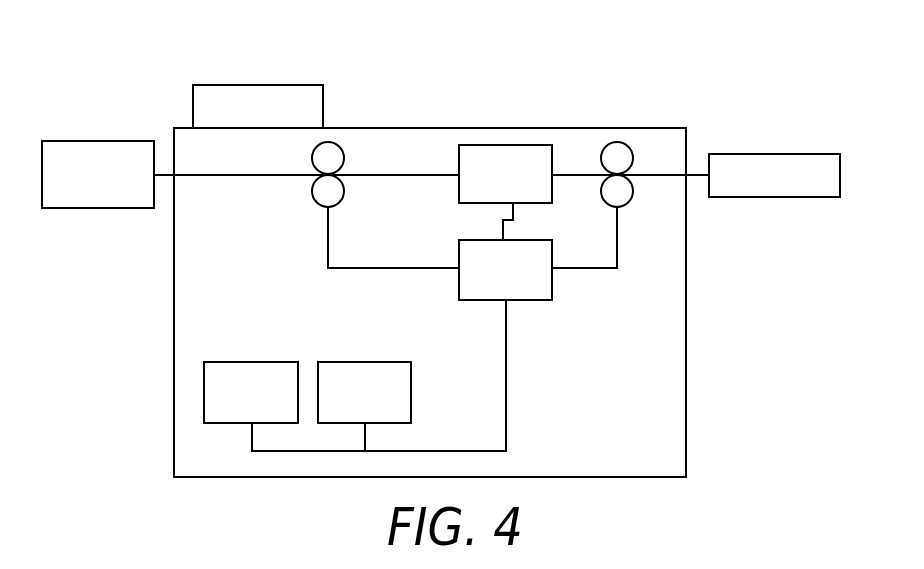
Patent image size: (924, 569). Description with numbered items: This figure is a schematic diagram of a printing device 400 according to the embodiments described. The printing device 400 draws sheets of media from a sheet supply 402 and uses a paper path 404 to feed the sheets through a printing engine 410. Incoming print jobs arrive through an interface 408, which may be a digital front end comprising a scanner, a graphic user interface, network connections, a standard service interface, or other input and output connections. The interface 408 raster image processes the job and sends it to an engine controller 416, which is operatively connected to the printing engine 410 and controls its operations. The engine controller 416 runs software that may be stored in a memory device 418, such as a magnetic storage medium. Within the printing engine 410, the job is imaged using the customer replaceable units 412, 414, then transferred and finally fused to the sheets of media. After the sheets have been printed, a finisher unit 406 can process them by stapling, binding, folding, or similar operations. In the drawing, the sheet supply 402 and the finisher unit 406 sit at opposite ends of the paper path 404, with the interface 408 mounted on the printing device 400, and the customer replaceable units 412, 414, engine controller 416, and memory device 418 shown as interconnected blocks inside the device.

The printing device 400 is at (174, 325).
The sheet supply 402 is at (90, 140).
The paper path 404 is at (283, 177).
The finisher unit 406 is at (768, 152).
The interface 408 is at (282, 84).
The printing engine 410 is at (378, 298).
The customer replaceable unit 412 is at (522, 187).
The customer replaceable unit 414 is at (522, 282).
The engine controller 416 is at (268, 406).
The memory device 418 is at (381, 406).